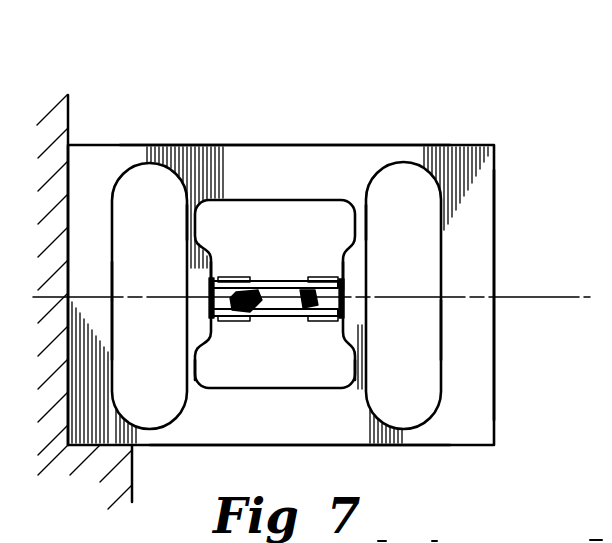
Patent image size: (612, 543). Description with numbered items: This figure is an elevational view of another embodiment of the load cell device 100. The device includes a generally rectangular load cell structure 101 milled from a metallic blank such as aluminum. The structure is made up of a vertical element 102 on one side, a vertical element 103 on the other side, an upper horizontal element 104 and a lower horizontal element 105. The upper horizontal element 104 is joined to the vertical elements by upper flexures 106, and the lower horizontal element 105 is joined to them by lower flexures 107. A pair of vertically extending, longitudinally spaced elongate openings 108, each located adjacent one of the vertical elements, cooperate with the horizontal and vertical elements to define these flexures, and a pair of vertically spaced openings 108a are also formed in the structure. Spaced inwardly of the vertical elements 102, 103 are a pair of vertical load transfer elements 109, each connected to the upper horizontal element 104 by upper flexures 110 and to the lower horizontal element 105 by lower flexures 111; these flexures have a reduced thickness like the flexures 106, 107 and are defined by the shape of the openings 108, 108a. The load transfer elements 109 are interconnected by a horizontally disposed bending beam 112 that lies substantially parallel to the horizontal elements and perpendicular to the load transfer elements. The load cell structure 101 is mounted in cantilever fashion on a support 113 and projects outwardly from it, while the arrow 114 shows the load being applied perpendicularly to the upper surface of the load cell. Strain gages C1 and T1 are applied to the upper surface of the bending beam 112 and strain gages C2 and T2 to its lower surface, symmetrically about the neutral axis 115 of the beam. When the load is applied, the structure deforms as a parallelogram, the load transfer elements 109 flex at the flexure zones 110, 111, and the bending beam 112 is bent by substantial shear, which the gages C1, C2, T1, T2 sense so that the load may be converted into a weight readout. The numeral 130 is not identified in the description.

The load cell device 100 is at (244, 92).
The load cell structure 101 is at (502, 137).
The vertical element 102 is at (113, 282).
The vertical element 103 is at (492, 239).
The upper horizontal element 104 is at (285, 146).
The lower horizontal element 105 is at (319, 445).
The upper flexures 106 is at (147, 157).
The lower flexures 107 is at (146, 434).
The elongate openings 108 is at (170, 325).
The openings 108a is at (230, 201).
The vertical load transfer elements 109 is at (203, 263).
The upper flexures 110 is at (182, 219).
The lower flexures 111 is at (194, 370).
The bending beam 112 is at (264, 286).
The support 113 is at (67, 97).
The arrow 114 is at (456, 133).
The neutral axis 115 is at (526, 297).
The load 130 is at (502, 530).
The strain gage C1 is at (258, 282).
The strain gage C2 is at (238, 318).
The strain gage T1 is at (327, 278).
The strain gage T2 is at (317, 316).